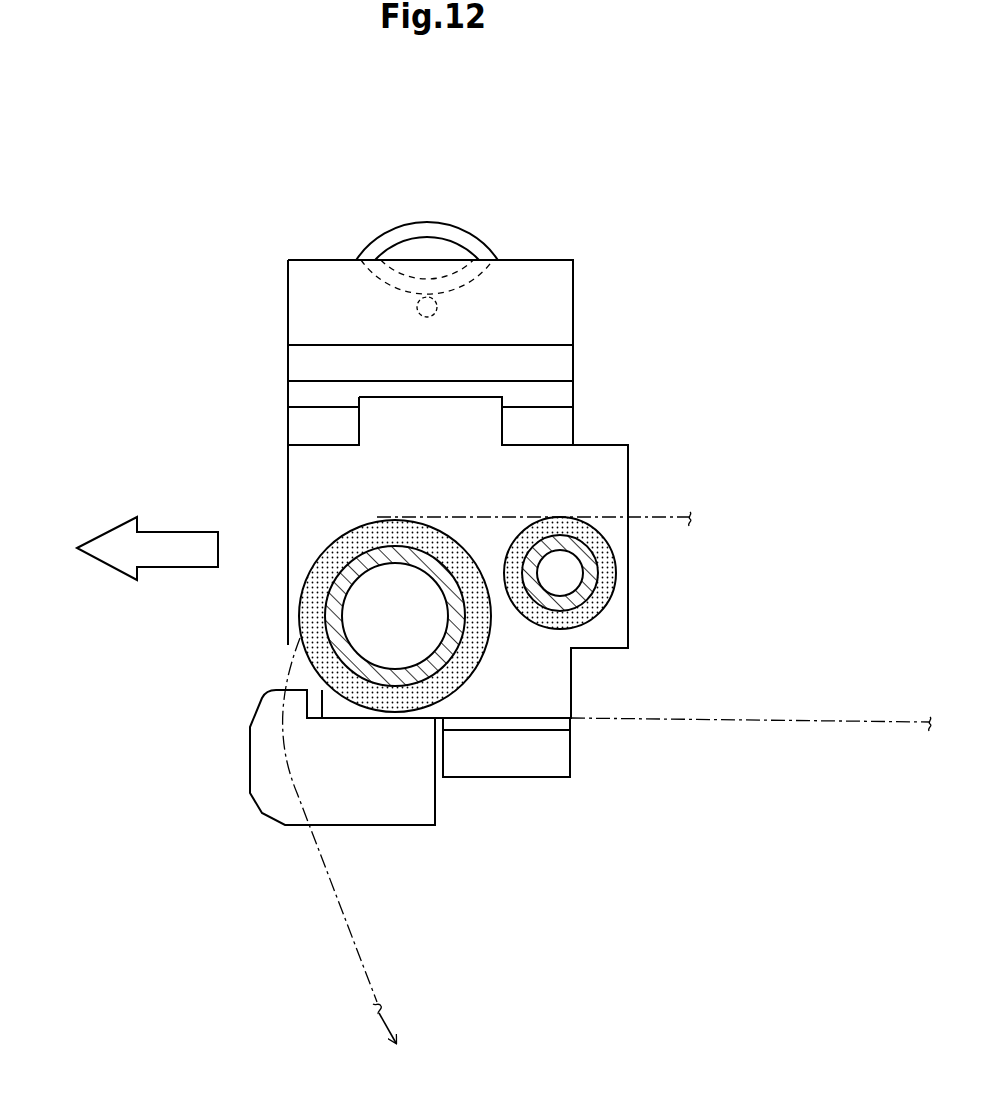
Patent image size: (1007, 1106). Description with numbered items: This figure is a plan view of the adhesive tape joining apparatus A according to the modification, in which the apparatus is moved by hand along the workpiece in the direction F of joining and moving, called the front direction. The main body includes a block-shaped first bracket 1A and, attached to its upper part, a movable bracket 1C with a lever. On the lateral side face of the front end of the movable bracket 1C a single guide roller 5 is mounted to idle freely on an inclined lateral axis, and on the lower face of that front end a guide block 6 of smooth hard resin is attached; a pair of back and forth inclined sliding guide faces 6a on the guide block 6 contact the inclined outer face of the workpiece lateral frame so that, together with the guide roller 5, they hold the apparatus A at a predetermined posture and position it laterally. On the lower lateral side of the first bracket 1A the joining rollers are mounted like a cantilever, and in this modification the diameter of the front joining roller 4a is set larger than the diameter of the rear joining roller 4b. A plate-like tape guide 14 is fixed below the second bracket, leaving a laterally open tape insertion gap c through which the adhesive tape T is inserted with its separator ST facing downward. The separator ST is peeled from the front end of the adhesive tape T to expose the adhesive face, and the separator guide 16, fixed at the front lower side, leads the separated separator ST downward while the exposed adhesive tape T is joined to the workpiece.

The first bracket 1A is at (287, 495).
The movable bracket 1C is at (573, 302).
The joining roller 4a is at (478, 670).
The joining roller 4b is at (615, 590).
The guide roller 5 is at (463, 230).
The guide block 6 is at (573, 423).
The sliding guide faces 6a is at (317, 452).
The tape guide 14 is at (570, 766).
The separator guide 16 is at (250, 772).
The tape insertion gap c is at (570, 722).
The adhesive tape T is at (480, 510).
The separator ST is at (357, 947).
The direction of joining and moving F is at (128, 548).
The adhesive tape joining apparatus A is at (348, 230).